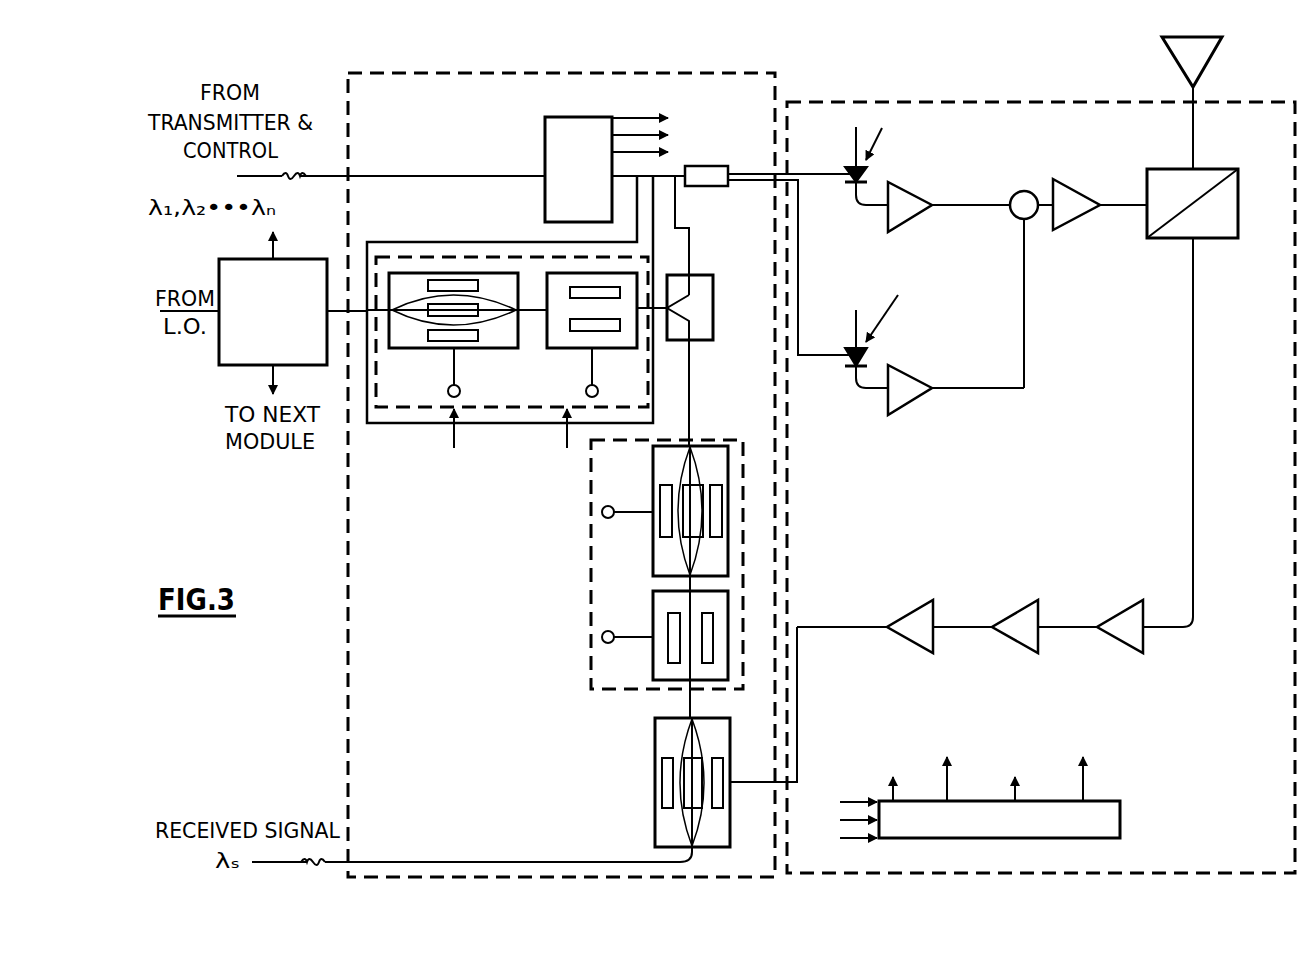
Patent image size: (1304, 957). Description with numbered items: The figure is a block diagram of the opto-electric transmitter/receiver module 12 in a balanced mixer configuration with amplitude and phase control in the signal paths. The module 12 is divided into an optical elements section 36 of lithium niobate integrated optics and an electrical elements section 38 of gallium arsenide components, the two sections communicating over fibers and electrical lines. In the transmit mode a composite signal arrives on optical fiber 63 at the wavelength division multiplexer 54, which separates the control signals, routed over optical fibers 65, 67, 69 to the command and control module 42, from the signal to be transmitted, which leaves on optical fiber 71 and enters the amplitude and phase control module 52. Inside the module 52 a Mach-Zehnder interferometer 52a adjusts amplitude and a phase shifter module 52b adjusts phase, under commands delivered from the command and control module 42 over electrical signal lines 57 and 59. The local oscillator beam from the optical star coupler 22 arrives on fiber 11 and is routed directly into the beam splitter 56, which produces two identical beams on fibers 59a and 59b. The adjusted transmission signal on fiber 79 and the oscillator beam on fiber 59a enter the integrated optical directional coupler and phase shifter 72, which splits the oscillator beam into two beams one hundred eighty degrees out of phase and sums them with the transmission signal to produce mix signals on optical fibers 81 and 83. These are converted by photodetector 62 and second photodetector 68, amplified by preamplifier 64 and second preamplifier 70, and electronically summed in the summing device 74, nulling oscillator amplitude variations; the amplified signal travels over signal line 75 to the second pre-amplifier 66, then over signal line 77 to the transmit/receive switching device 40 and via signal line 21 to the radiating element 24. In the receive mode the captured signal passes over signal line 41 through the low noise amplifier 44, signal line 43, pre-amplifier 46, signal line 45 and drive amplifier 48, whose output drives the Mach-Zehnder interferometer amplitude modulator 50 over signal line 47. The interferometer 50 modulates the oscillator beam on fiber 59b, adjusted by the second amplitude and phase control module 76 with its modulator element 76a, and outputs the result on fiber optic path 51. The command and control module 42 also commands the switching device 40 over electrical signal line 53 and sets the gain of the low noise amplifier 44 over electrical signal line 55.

The opto-electric transmitter/receiver module 12 is at (656, 64).
The optical elements section 36 is at (476, 73).
The electrical elements section 38 is at (905, 102).
The optical fiber 63 is at (395, 176).
The wavelength division multiplexer 54 is at (545, 140).
The optical fiber 65 is at (636, 115).
The optical fiber 67 is at (636, 133).
The optical fiber 69 is at (636, 150).
The integrated optical directional coupler and phase shifter 72 is at (708, 166).
The optical star coupler 22 is at (282, 259).
The fiber 11 is at (333, 318).
The amplitude and phase control module 52 is at (517, 310).
The optical fiber 71 is at (548, 243).
The Mach-Zehnder interferometer 52a is at (436, 348).
The phase shifter module 52b is at (612, 348).
The electrical signal line 57 is at (454, 446).
The electrical signal line 59 is at (567, 446).
The fiber 59a is at (675, 204).
The fiber 79 is at (653, 248).
The beam splitter 56 is at (708, 340).
The fiber 59b is at (689, 392).
The second amplitude and phase control module 76 is at (633, 564).
The amplitude modulator 76a is at (653, 488).
The Mach-Zehnder interferometer amplitude modulator 50 is at (655, 782).
The fiber optic path 51 is at (497, 862).
The optical fiber 81 is at (820, 174).
The photodetector 62 is at (865, 165).
The preamplifier 64 is at (908, 225).
The optical fiber 83 is at (798, 240).
The signal line 75 is at (975, 205).
The summing device 74 is at (1030, 232).
The second pre-amplifier 66 is at (1063, 225).
The signal line 77 is at (1112, 208).
The signal line 21 is at (1193, 140).
The transmit/receive switching device 40 is at (1222, 169).
The radiating element 24 is at (1212, 58).
The second photodetector 68 is at (848, 362).
The second preamplifier 70 is at (908, 408).
The signal line 41 is at (1193, 375).
The drive amplifier 48 is at (908, 615).
The signal line 47 is at (855, 630).
The pre-amplifier 46 is at (1013, 615).
The signal line 45 is at (952, 630).
The low noise amplifier 44 is at (1118, 615).
The signal line 43 is at (1055, 630).
The command and control module 42 is at (1120, 816).
The electrical signal line 53 is at (1083, 797).
The electrical signal line 55 is at (1015, 797).